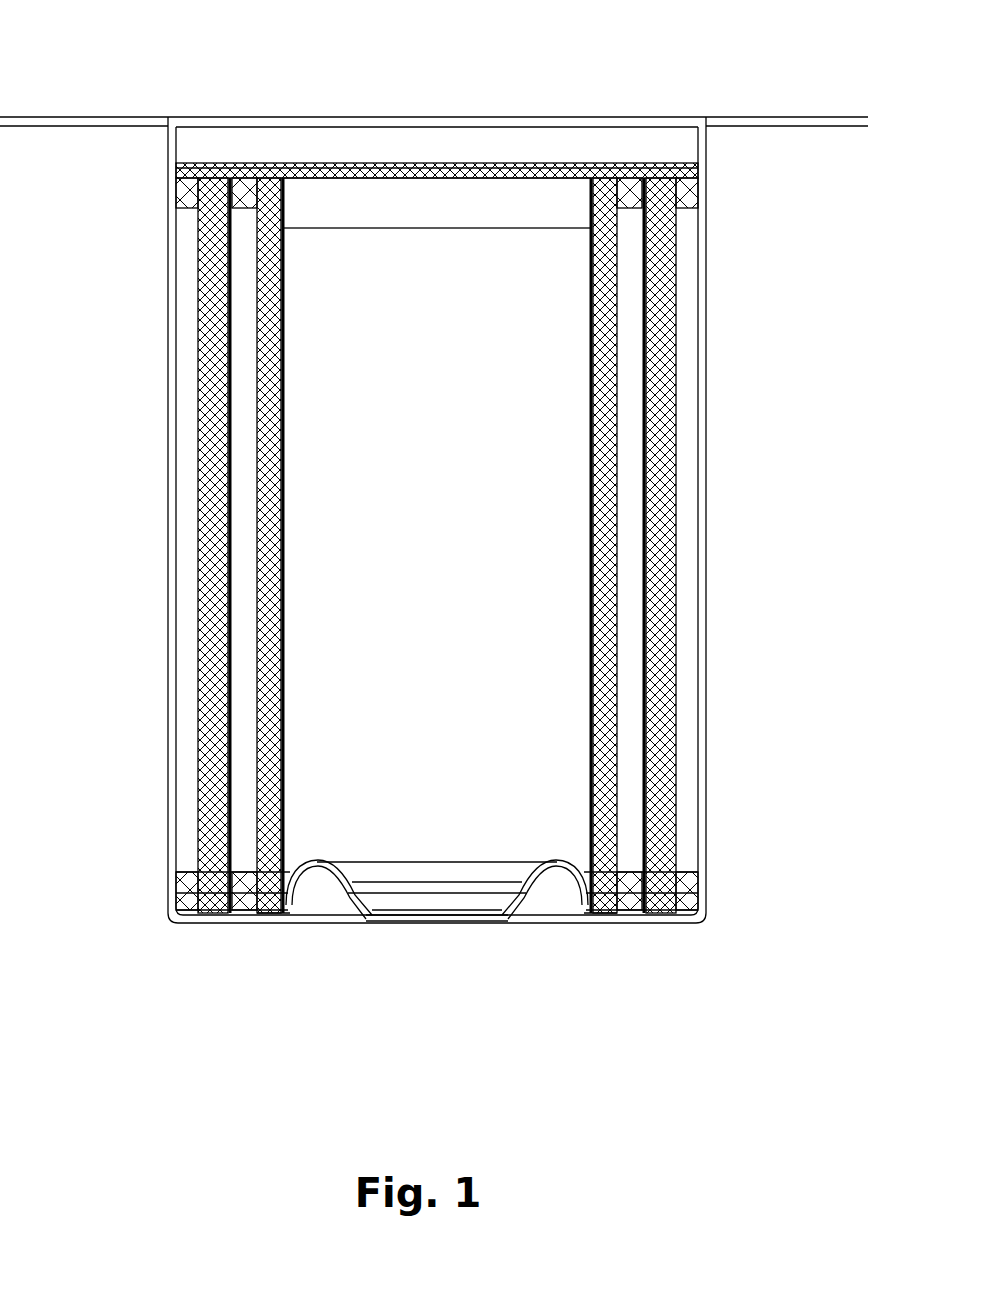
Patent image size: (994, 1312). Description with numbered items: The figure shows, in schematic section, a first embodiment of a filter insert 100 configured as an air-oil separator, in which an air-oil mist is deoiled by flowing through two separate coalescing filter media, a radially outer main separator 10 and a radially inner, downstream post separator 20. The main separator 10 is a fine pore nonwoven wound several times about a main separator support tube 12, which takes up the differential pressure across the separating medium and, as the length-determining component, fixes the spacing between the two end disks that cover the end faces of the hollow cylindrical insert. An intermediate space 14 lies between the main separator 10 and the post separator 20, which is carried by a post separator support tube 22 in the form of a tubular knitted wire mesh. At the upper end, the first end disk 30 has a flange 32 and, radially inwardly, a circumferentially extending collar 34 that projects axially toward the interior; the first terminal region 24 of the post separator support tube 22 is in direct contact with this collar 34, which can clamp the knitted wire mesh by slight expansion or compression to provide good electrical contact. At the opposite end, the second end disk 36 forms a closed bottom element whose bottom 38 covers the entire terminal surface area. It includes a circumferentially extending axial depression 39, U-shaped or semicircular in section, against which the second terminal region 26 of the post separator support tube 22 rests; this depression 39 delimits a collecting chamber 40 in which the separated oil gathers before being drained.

The filter insert 100 is at (142, 73).
The first end disk 30 is at (452, 147).
The flange 32 is at (90, 125).
The collar 34 is at (383, 217).
The first terminal region 24 is at (283, 185).
The main separator 10 is at (213, 365).
The main separator support tube 12 is at (230, 455).
The intermediate space 14 is at (247, 597).
The post separator 20 is at (278, 556).
The post separator support tube 22 is at (283, 647).
The second end disk 36 is at (218, 920).
The second terminal region 26 is at (285, 918).
The collecting chamber 40 is at (418, 907).
The axial depression 39 is at (320, 860).
The bottom 38 is at (455, 920).